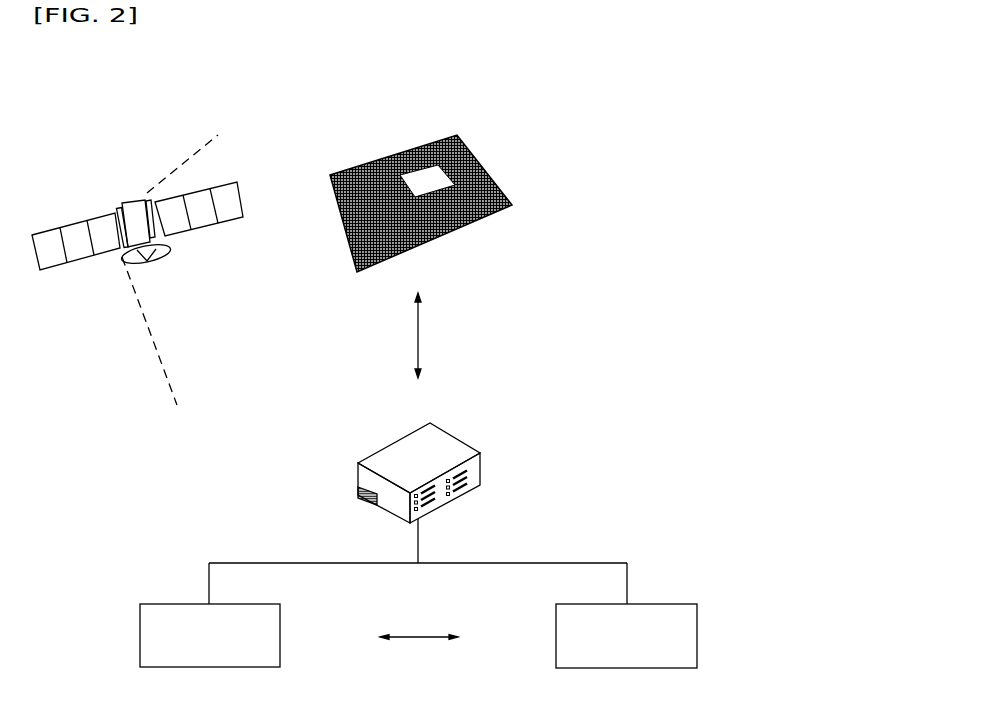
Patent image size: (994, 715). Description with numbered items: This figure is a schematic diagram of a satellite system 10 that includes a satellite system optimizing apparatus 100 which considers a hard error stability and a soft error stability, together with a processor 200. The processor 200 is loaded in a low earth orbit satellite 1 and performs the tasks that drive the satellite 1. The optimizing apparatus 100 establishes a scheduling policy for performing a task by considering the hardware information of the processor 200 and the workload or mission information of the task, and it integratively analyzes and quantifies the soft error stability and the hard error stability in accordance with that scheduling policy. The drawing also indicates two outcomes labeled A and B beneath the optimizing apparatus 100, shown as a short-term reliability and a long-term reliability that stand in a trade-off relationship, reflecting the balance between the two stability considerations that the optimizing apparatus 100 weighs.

The satellite system 10 is at (402, 66).
The low earth orbit (LEO) satellite 1 is at (120, 192).
The processor 200 is at (388, 158).
The satellite system optimizing apparatus 100 is at (408, 431).
The short-term reliability A is at (160, 592).
The long-term reliability B is at (677, 592).